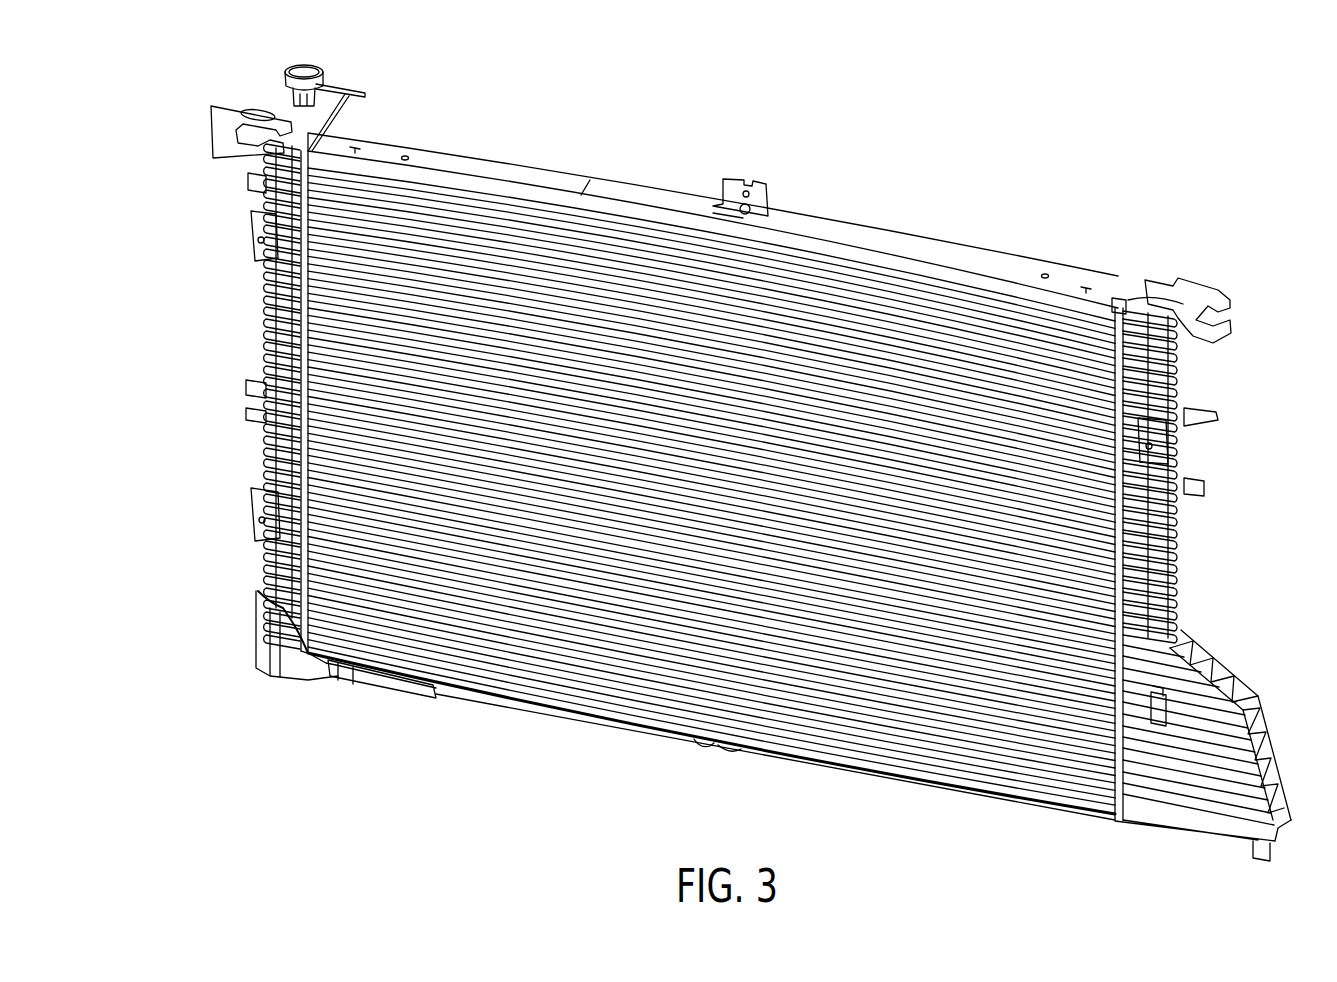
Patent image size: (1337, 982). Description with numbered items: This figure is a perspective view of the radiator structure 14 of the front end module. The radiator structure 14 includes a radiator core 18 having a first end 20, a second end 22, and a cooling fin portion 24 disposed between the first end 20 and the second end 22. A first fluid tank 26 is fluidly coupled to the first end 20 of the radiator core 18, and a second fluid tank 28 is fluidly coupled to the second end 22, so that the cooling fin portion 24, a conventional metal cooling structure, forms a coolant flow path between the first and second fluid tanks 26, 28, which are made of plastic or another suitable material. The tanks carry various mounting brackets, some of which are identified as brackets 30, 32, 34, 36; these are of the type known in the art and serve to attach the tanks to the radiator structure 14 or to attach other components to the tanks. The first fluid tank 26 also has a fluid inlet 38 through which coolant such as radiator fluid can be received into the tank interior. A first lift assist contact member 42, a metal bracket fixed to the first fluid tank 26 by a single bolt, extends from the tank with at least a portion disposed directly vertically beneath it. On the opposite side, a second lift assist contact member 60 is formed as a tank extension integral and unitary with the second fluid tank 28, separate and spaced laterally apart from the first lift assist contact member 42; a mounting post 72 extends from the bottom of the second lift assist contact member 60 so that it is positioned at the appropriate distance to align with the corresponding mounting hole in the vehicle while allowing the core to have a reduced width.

The radiator structure 14 is at (889, 137).
The radiator core 18 is at (890, 766).
The first end 20 is at (300, 152).
The second end 22 is at (1110, 298).
The cooling fin portion 24 is at (545, 662).
The first fluid tank 26 is at (262, 345).
The second fluid tank 28 is at (1160, 552).
The mounting bracket 30 is at (206, 104).
The mounting bracket 32 is at (250, 220).
The mounting bracket 34 is at (1200, 292).
The mounting bracket 36 is at (1178, 437).
The fluid inlet 38 is at (302, 67).
The first lift assist contact member 42 is at (294, 682).
The second lift assist contact member 60 is at (1251, 746).
The mounting post 72 is at (1263, 846).